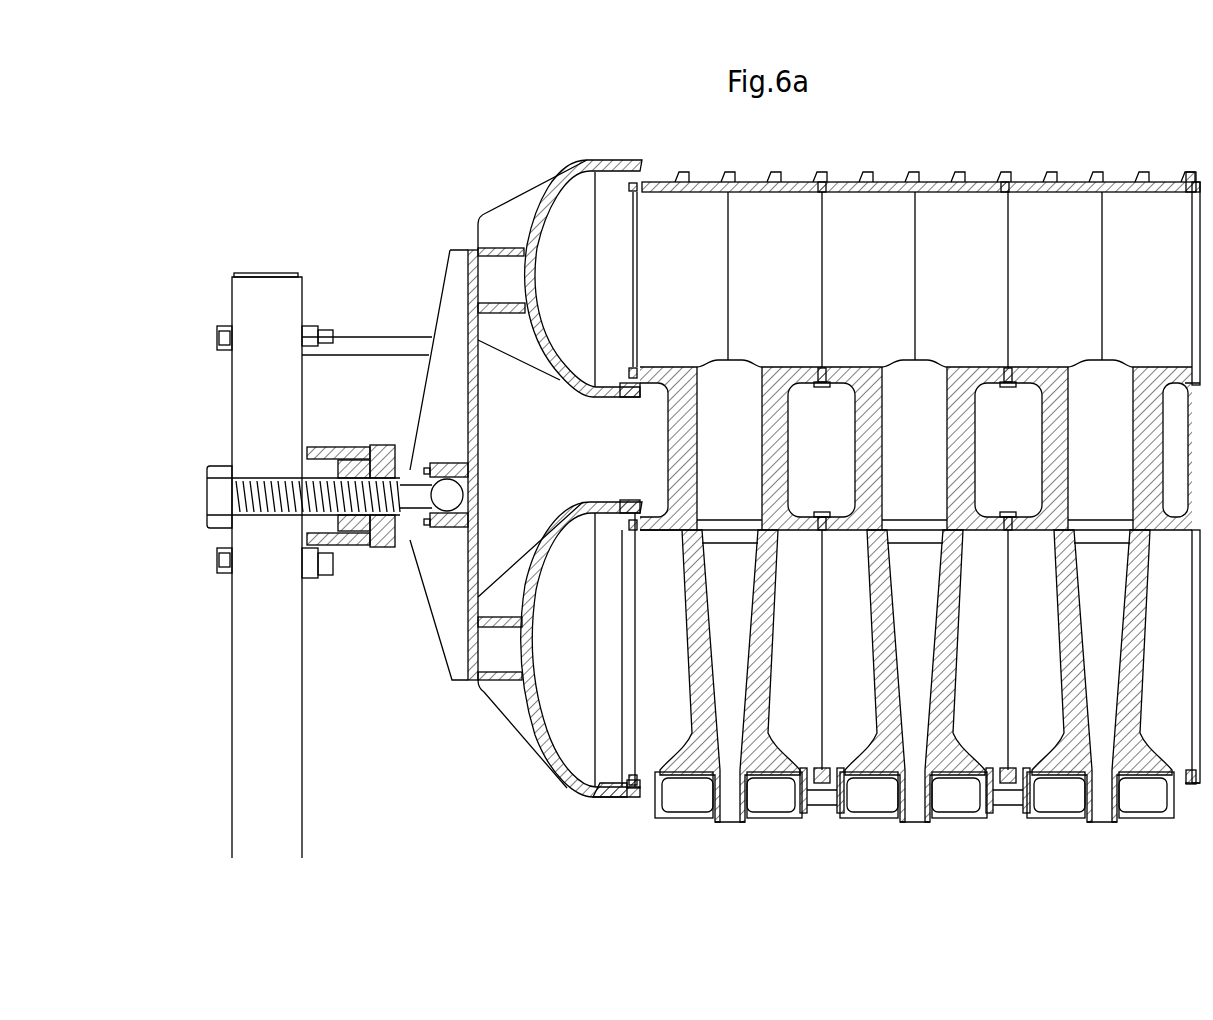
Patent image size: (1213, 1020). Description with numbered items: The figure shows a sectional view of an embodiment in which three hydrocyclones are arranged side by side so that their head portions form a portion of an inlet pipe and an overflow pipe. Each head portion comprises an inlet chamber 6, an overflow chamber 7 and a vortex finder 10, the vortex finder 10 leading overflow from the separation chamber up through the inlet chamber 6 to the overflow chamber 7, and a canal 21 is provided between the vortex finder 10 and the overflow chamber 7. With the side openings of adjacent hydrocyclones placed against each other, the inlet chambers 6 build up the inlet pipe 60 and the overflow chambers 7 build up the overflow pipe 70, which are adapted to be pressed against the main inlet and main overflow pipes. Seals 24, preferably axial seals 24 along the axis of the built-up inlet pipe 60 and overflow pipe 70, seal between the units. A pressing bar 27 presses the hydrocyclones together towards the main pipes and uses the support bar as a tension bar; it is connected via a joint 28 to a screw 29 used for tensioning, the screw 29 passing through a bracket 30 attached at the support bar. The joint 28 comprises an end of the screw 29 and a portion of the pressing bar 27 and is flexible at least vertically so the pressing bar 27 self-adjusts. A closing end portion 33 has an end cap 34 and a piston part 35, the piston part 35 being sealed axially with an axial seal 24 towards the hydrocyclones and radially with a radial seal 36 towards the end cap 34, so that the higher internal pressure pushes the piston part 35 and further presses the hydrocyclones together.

The inlet chamber 6 is at (659, 678).
The overflow chamber 7 is at (684, 296).
The vortex finder 10 is at (720, 593).
The canal 21 is at (718, 456).
The axial seal 24 is at (634, 190).
The pressing bar 27 is at (447, 307).
The joint 28 is at (455, 493).
The screw 29 is at (222, 472).
The bracket 30 is at (384, 548).
The closing end portion 33 is at (536, 793).
The end cap 34 is at (530, 735).
The piston part 35 is at (613, 787).
The radial seal 36 is at (604, 790).
The inlet pipe 60 is at (1197, 826).
The overflow pipe 70 is at (1197, 152).